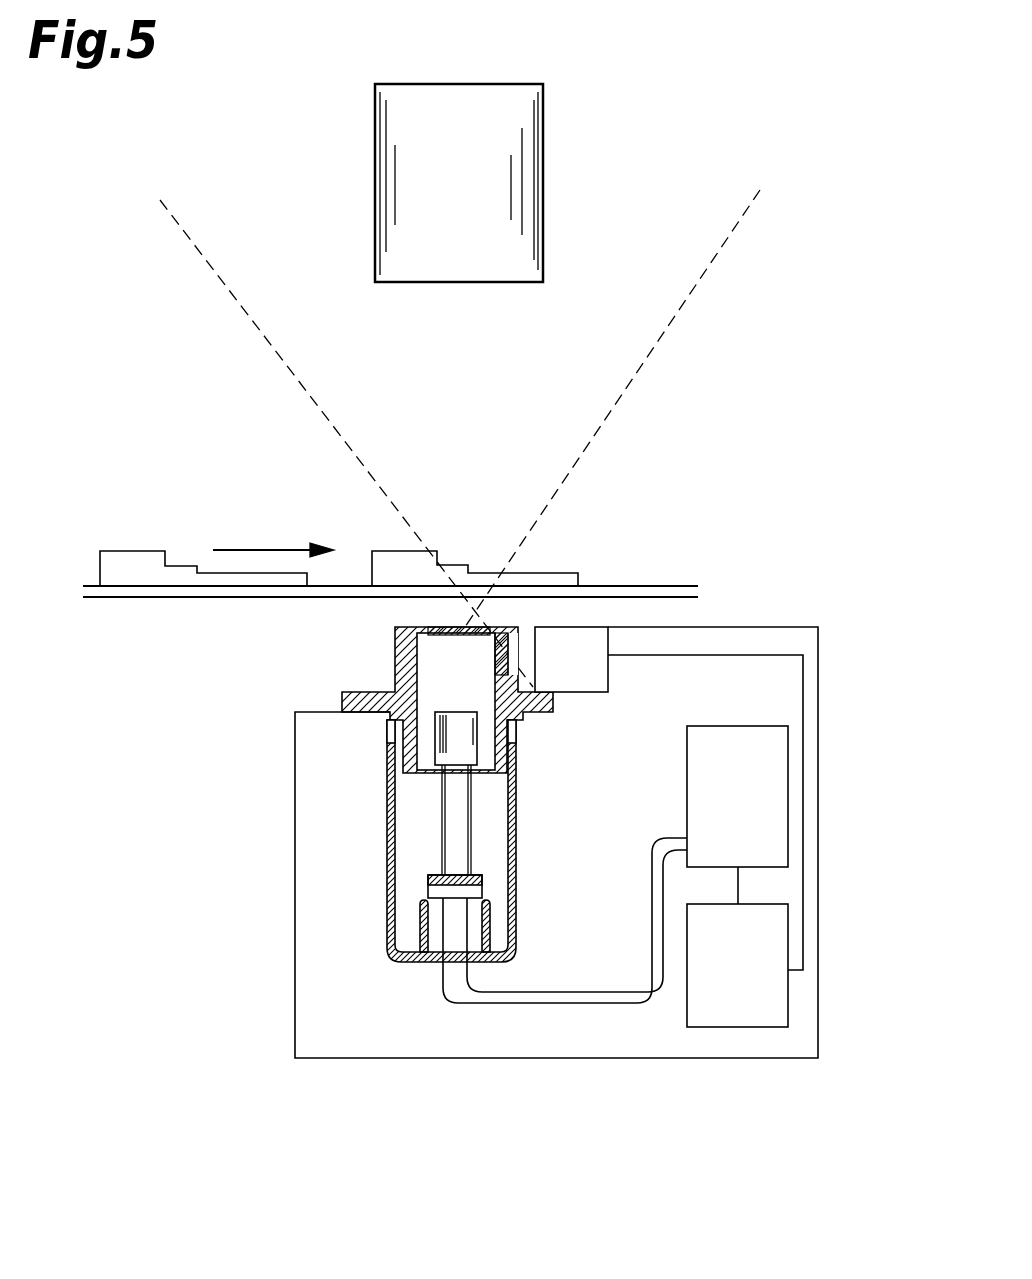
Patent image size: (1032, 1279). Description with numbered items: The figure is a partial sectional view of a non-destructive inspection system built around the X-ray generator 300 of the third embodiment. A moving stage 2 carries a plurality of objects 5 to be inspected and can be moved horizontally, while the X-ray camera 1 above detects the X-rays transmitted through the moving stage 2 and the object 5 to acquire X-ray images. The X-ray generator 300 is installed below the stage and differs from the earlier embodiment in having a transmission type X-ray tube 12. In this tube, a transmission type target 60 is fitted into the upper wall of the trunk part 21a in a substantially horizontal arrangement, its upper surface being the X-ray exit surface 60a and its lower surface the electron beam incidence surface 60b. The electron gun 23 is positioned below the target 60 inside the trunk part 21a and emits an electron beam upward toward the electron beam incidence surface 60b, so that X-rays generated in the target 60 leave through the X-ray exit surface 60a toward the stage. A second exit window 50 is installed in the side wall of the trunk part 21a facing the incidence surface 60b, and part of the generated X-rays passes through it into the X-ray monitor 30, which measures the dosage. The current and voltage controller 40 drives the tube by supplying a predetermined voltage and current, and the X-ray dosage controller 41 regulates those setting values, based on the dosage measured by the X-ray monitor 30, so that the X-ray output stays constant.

The X-ray camera 1 is at (540, 90).
The moving stage 2 is at (178, 598).
The object to be inspected 5 is at (129, 558).
The transmission type X-ray tube 12 is at (374, 909).
The trunk part 21a is at (393, 680).
The electron gun 23 is at (467, 757).
The X-ray monitor 30 is at (608, 683).
The current and voltage controller 40 is at (772, 836).
The X-ray dosage controller 41 is at (770, 1012).
The second exit window 50 is at (514, 640).
The transmission type target 60 is at (398, 673).
The X-ray exit surface 60a is at (453, 626).
The electron beam incidence surface 60b is at (450, 637).
The X-ray generator 300 is at (828, 1126).